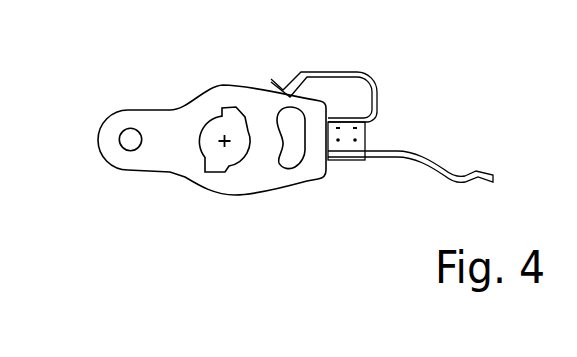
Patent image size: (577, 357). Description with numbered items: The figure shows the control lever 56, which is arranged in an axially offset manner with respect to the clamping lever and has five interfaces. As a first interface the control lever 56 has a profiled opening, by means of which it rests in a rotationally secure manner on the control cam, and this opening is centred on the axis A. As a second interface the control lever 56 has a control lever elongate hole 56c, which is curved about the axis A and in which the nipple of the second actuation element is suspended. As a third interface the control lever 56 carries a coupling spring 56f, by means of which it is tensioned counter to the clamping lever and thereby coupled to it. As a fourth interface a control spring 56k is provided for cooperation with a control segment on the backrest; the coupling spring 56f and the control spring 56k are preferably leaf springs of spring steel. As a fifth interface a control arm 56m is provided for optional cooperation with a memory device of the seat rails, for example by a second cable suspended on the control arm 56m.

The control lever 56 is at (238, 94).
The control arm 56m is at (112, 150).
The axis A is at (223, 138).
The control lever elongate hole 56c is at (293, 152).
The coupling spring 56f is at (340, 82).
The control spring 56k is at (475, 172).